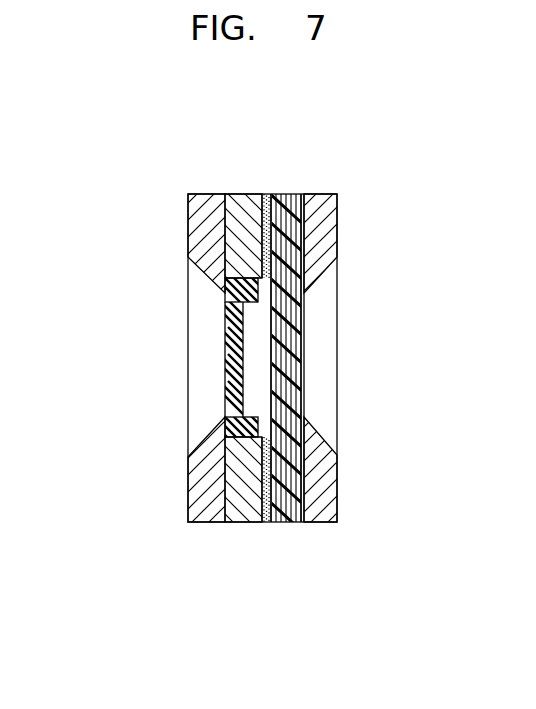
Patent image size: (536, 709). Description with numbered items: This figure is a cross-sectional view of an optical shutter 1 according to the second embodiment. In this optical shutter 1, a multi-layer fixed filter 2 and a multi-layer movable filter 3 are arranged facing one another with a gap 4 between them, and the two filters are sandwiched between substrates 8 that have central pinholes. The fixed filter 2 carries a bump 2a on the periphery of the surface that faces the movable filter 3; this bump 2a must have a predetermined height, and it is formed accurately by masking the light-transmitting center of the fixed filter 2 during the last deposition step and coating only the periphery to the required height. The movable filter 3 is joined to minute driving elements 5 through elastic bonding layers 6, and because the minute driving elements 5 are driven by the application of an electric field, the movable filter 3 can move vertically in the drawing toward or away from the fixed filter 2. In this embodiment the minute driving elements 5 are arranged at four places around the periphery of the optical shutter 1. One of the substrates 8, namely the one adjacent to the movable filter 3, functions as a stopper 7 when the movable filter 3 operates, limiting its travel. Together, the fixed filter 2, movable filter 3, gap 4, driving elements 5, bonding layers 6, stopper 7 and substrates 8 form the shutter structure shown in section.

The optical shutter 1 is at (323, 188).
The fixed filter 2 is at (225, 325).
The bump 2a is at (257, 278).
The movable filter 3 is at (302, 307).
The gap 4 is at (272, 367).
The minute driving elements 5 is at (238, 522).
The elastic bonding layers 6 is at (265, 522).
The stopper 7 is at (310, 522).
The substrates 8 is at (202, 485).